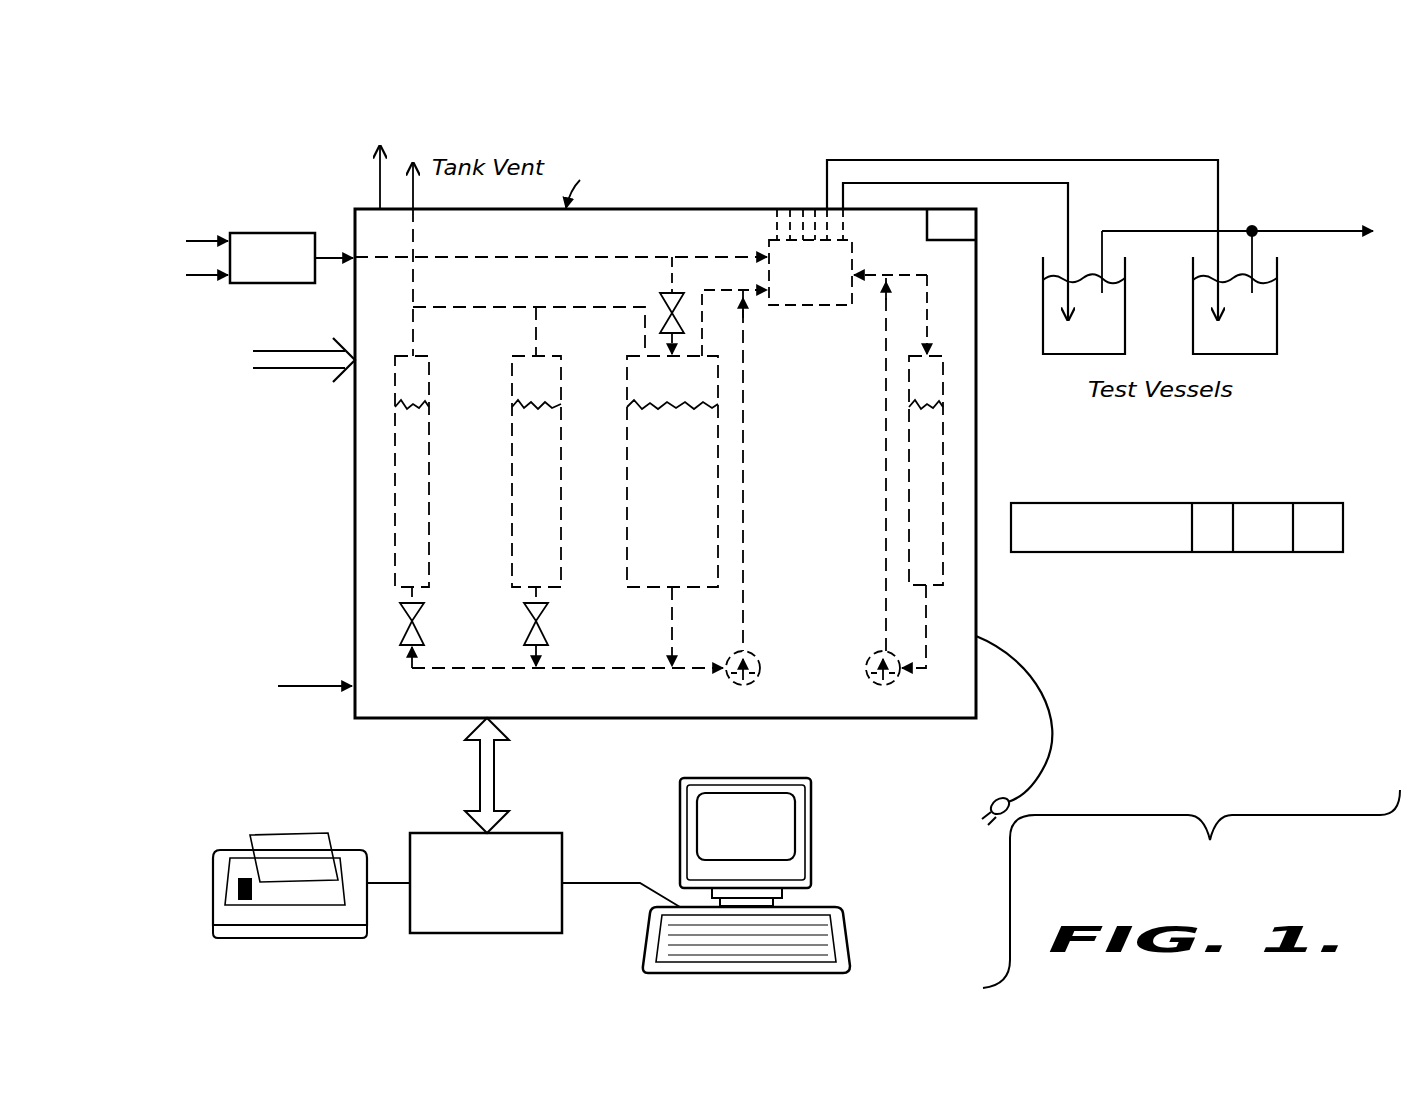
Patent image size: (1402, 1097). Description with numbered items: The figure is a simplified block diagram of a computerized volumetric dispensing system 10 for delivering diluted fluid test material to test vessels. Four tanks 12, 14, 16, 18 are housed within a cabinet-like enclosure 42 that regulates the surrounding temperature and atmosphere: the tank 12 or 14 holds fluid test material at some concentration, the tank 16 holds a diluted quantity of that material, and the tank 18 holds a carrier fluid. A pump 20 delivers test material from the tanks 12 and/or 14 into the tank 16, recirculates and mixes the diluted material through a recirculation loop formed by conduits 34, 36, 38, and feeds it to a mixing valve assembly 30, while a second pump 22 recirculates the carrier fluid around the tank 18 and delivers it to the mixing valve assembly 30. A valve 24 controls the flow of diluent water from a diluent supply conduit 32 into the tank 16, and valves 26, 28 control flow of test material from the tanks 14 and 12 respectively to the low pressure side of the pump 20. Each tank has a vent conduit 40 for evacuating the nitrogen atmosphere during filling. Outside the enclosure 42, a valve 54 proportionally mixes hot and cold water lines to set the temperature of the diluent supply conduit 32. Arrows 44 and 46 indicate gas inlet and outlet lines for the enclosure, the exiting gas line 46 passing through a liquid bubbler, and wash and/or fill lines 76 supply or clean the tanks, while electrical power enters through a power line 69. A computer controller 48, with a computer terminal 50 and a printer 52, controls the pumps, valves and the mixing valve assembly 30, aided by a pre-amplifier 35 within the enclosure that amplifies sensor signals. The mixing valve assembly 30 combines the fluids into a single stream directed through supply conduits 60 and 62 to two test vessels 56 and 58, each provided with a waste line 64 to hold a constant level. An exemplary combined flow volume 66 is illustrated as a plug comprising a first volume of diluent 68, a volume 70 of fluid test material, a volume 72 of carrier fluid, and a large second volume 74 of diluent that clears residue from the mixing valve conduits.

The computerized volumetric dispensing system 10 is at (320, 556).
The tank 12 is at (428, 468).
The tank 14 is at (516, 527).
The tank 16 is at (634, 523).
The tank 18 is at (916, 485).
The pump 20 is at (762, 656).
The pump 22 is at (866, 681).
The valve 24 is at (660, 300).
The valve 26 is at (530, 628).
The valve 28 is at (408, 626).
The mixing valve assembly 30 is at (825, 306).
The diluent supply conduit 32 is at (560, 256).
The conduit 34 is at (666, 643).
The pre-amplifier 35 is at (927, 232).
The conduit 36 is at (745, 546).
The conduit 38 is at (704, 340).
The vent conduit 40 is at (576, 312).
The enclosure 42 is at (354, 441).
The gas inlet line 44 is at (299, 683).
The exiting gas line 46 is at (379, 186).
The computer controller 48 is at (544, 832).
The computer terminal 50 is at (678, 838).
The printer 52 is at (340, 847).
The valve 54 is at (275, 231).
The test vessel 56 is at (1058, 353).
The test vessel 58 is at (1277, 331).
The supply conduit 60 is at (1067, 219).
The supply conduit 62 is at (1140, 160).
The waste line 64 is at (1290, 230).
The combined flow volume 66 is at (1189, 539).
The first predetermined volume of diluent 68 is at (1330, 508).
The power line 69 is at (1035, 683).
The predetermined volume of fluid test material 70 is at (1262, 506).
The predetermined volume of carrier fluid 72 is at (1212, 506).
The second predetermined volume of diluent 74 is at (1118, 509).
The wash and/or fill lines 76 is at (272, 372).